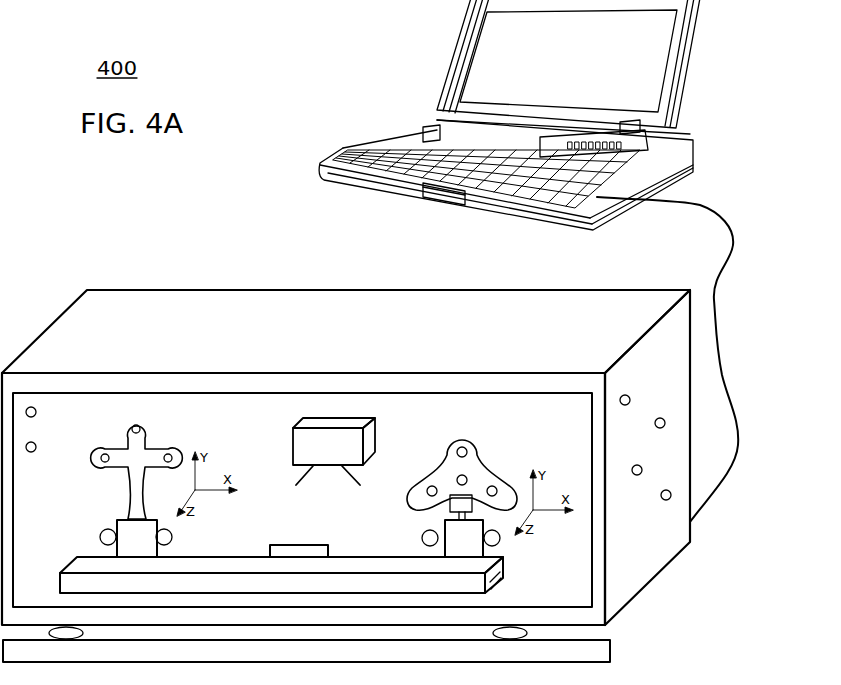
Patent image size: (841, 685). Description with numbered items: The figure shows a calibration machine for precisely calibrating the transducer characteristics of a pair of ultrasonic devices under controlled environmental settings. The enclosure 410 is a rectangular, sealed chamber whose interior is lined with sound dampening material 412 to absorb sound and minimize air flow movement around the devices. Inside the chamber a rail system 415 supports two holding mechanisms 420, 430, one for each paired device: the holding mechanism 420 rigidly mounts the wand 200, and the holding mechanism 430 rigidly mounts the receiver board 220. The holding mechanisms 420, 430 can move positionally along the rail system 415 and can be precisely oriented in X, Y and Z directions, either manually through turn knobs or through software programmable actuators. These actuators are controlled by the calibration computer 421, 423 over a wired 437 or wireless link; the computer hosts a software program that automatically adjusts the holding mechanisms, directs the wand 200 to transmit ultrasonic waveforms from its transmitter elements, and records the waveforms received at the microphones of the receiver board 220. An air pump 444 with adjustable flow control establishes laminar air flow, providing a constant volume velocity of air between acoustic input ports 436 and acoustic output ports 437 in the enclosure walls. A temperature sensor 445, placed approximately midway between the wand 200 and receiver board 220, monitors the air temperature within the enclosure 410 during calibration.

The enclosure 410 is at (117, 288).
The sound dampening material 412 is at (482, 393).
The rail system 415 is at (493, 575).
The holding mechanism 420 is at (115, 527).
The calibration computer 421 is at (465, 52).
The calibration computer 423 is at (610, 648).
The holding mechanism 430 is at (432, 535).
The acoustic input ports 436 is at (660, 497).
The wired link 437 is at (680, 201).
The air pump 444 is at (334, 451).
The temperature sensor 445 is at (299, 540).
The wand 200 is at (152, 450).
The receiver board 220 is at (482, 467).